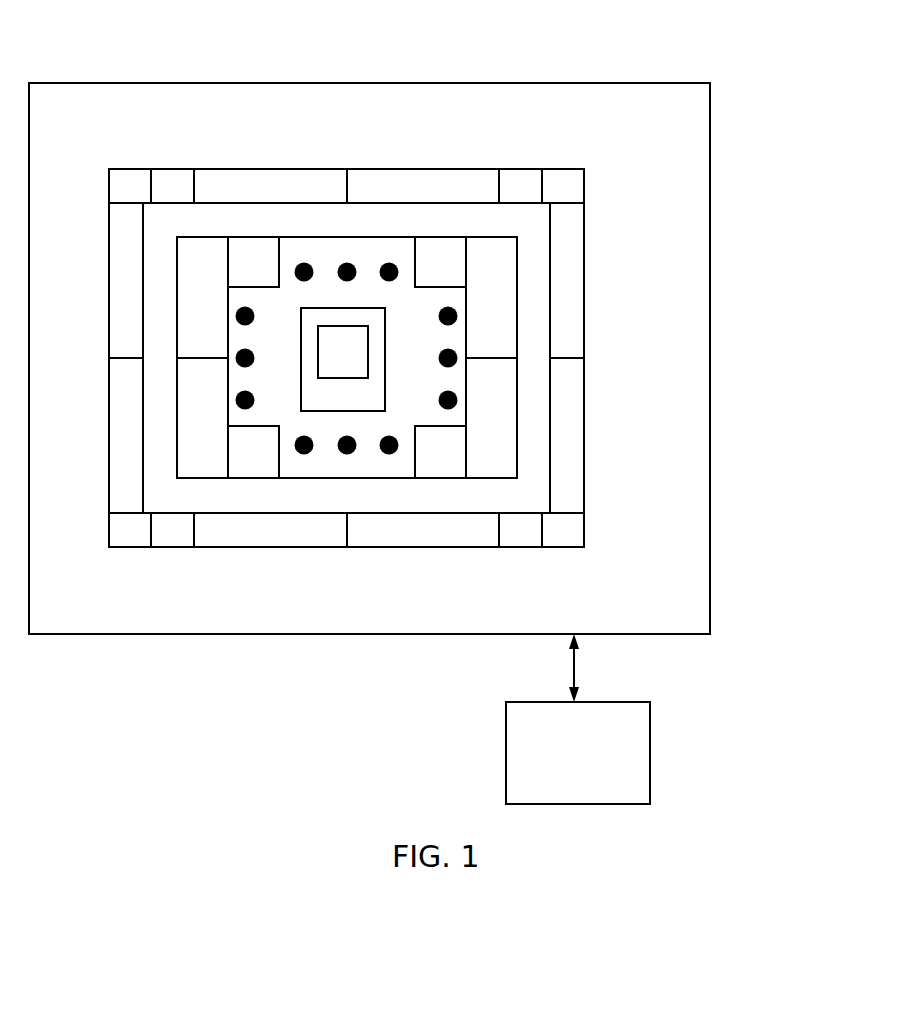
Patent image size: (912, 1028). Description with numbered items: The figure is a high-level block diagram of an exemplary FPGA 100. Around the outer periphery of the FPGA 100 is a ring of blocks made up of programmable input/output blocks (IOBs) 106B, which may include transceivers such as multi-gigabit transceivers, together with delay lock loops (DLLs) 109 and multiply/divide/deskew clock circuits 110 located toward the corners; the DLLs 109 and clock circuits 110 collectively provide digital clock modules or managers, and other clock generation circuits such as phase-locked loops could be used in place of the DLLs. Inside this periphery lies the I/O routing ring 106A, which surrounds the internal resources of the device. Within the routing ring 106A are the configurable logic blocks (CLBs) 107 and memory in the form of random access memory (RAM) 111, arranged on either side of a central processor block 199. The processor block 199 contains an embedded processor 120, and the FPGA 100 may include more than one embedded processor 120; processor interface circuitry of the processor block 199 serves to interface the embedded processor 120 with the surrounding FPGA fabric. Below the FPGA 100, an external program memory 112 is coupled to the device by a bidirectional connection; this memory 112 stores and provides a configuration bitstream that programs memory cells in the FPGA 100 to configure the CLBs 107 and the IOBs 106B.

The FPGA 100 is at (623, 78).
The I/O routing ring 106A is at (371, 230).
The programmable input/output blocks 106B is at (243, 169).
The configurable logic blocks 107 is at (270, 265).
The delay lock loops 109 is at (158, 169).
The multiply/divide/deskew clock circuits 110 is at (584, 183).
The random access memory 111 is at (219, 306).
The external memory 112 is at (562, 785).
The embedded processor 120 is at (360, 361).
The processor block 199 is at (360, 403).